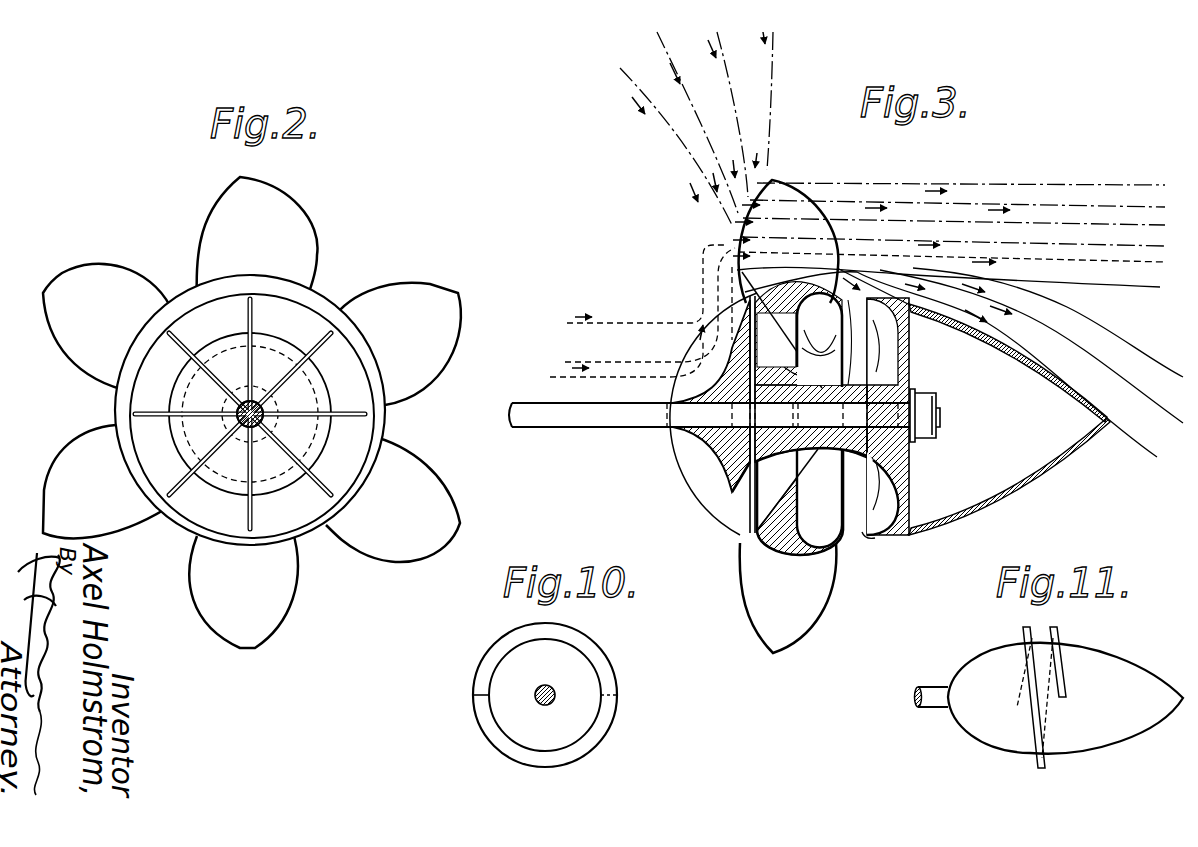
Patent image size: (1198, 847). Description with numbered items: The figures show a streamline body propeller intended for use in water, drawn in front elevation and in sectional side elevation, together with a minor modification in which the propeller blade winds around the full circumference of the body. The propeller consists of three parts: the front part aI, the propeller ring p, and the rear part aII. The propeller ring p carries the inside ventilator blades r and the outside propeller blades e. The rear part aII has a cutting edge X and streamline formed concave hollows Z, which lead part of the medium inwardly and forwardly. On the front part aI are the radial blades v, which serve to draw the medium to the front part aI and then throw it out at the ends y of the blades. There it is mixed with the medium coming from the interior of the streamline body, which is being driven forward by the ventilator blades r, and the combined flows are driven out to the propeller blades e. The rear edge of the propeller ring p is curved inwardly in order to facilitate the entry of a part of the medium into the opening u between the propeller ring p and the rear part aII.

In FIG. 2, the outside propeller blades e is at (293, 206).
In FIG. 3, the outside propeller blades e is at (787, 188).
In FIG. 2, the ends of the blades y is at (333, 327).
In FIG. 3, the ends of the blades y is at (745, 310).
In FIG. 2, the radial blades v is at (292, 378).
In FIG. 3, the radial blades v is at (680, 458).
In FIG. 2, the front part aI is at (223, 483).
In FIG. 3, the front part aI is at (722, 452).
In FIG. 3, the propeller ring p is at (838, 285).
In FIG. 3, the inside ventilator blades r is at (796, 330).
In FIG. 3, the streamline formed concave hollows Z is at (887, 493).
In FIG. 3, the rear part aII is at (1053, 467).
In FIG. 3, the cutting edge X is at (867, 534).
In FIG. 3, the opening u is at (850, 527).